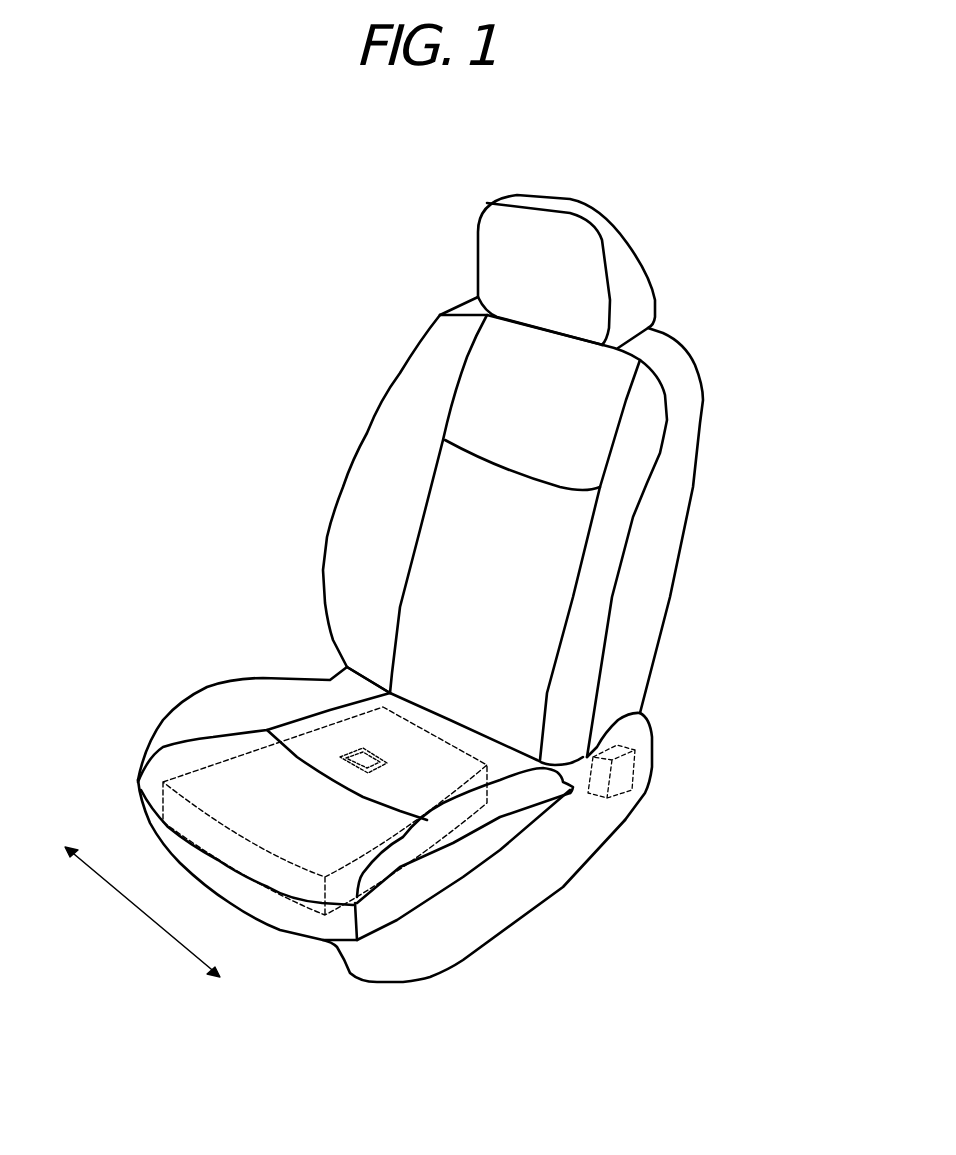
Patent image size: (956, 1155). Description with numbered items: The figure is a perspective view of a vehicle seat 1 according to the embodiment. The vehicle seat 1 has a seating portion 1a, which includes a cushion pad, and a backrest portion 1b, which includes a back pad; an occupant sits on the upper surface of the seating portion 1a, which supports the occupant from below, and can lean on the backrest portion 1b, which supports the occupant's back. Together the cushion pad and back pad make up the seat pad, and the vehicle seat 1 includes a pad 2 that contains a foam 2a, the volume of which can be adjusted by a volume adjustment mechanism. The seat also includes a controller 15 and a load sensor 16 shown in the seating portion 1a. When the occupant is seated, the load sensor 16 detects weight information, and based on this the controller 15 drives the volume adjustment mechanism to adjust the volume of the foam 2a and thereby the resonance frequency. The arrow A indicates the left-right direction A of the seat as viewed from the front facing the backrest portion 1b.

The vehicle seat 1 is at (688, 208).
The seating portion 1a is at (212, 668).
The backrest portion 1b is at (340, 433).
The foam 2a is at (230, 777).
The pad 2 is at (325, 811).
The controller 15 is at (622, 772).
The load sensor 16 is at (357, 747).
The left-right direction A is at (142, 912).